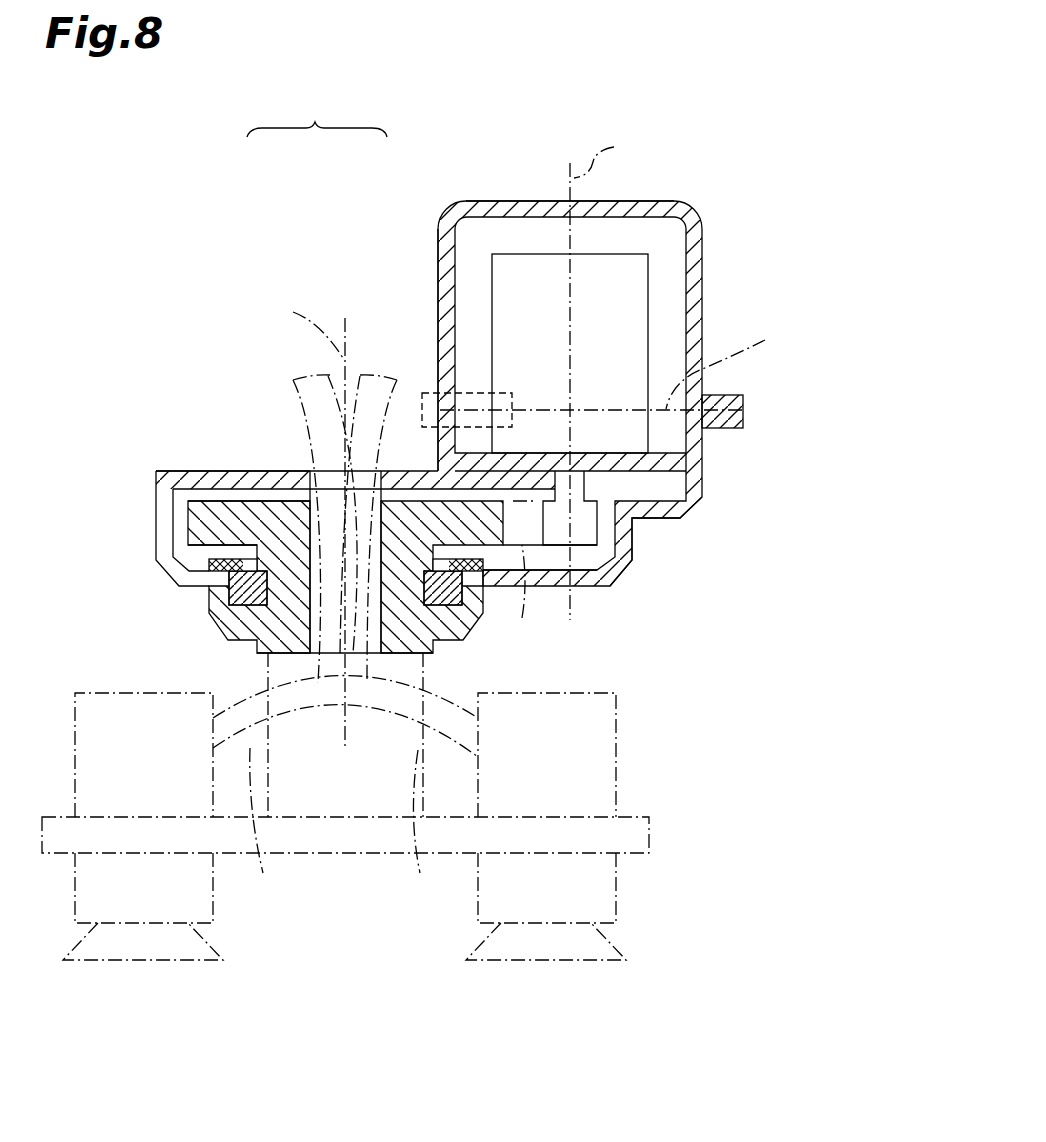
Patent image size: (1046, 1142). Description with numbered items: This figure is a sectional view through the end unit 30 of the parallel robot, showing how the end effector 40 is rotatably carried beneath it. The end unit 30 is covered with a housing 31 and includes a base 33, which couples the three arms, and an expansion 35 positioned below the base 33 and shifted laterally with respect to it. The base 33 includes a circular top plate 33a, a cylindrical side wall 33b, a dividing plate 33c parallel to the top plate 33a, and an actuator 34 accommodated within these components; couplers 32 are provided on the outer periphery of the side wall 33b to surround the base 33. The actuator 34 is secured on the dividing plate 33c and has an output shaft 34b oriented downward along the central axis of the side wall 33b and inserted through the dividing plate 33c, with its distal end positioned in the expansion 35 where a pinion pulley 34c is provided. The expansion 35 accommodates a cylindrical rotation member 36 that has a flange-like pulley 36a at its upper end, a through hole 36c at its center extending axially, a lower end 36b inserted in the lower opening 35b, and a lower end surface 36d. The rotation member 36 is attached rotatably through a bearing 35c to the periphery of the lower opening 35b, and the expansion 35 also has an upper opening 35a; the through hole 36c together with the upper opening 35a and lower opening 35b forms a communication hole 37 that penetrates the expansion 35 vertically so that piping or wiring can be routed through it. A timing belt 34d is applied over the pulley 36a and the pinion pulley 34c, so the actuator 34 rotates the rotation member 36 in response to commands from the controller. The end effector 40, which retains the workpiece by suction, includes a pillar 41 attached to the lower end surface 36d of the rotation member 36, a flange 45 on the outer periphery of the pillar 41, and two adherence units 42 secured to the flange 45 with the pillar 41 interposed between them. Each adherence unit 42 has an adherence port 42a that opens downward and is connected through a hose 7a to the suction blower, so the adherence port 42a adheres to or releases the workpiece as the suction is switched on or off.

The end unit 30 is at (690, 95).
The housing 31 is at (317, 115).
The coupler 32 is at (470, 393).
The base 33 is at (458, 215).
The top plate 33a is at (528, 203).
The side wall 33b is at (448, 283).
The dividing plate 33c is at (632, 463).
The actuator 34 is at (631, 304).
The output shaft 34b is at (580, 485).
The pinion pulley 34c is at (589, 530).
The timing belt 34d is at (525, 574).
The expansion 35 is at (179, 471).
The upper opening 35a is at (322, 474).
The lower opening 35b is at (425, 625).
The bearing 35c is at (303, 584).
The rotation member 36 is at (283, 583).
The pulley 36a is at (217, 530).
The lower end 36b is at (283, 655).
The through hole 36c is at (310, 600).
The lower end surface 36d is at (393, 655).
The communication hole 37 is at (323, 522).
The end effector 40 is at (672, 765).
The pillar 41 is at (425, 795).
The adherence unit 42 is at (90, 690).
The adherence port 42a is at (138, 962).
The flange 45 is at (652, 838).
The hose 7a is at (344, 826).